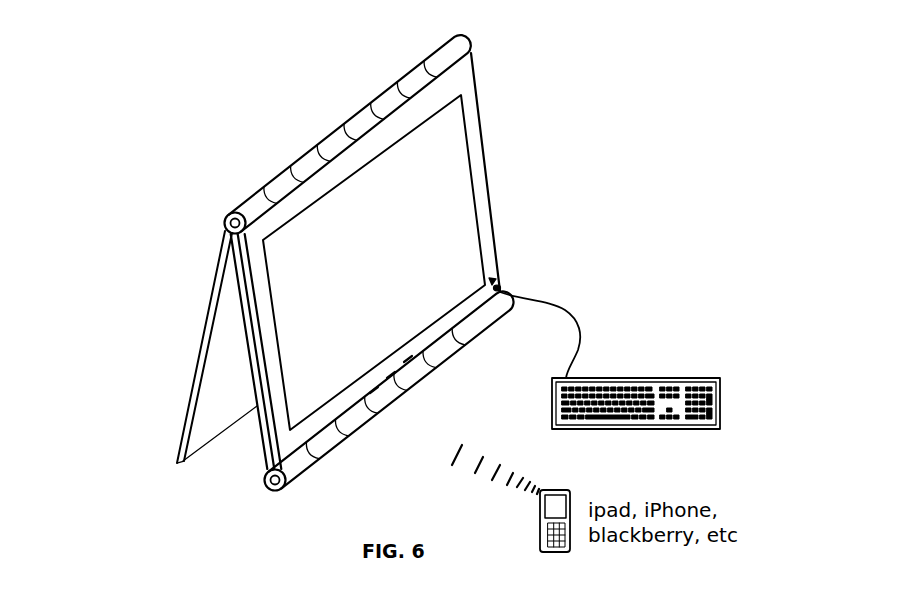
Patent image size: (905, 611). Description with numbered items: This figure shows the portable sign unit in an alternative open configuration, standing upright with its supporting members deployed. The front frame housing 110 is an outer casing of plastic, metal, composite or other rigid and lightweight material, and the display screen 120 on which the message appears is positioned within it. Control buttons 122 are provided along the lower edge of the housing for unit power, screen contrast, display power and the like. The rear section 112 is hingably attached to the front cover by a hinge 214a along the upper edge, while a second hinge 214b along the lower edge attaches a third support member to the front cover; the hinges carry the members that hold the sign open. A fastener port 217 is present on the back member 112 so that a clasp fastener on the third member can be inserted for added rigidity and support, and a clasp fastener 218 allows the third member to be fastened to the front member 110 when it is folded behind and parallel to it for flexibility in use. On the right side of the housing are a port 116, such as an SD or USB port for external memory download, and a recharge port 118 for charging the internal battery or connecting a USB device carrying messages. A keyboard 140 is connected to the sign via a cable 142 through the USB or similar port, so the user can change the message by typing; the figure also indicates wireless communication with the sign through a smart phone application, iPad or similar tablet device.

The front frame housing 110 is at (485, 202).
The rear section 112 is at (198, 335).
The port 116 is at (500, 283).
The recharge port 118 is at (503, 289).
The display screen 120 is at (443, 138).
The control buttons 122 is at (374, 391).
The keyboard 140 is at (703, 370).
The cable 142 is at (579, 337).
The hinge 214a is at (330, 135).
The second hinge 214b is at (358, 433).
The fastener port 217 is at (178, 455).
The clasp fastener 218 is at (240, 236).